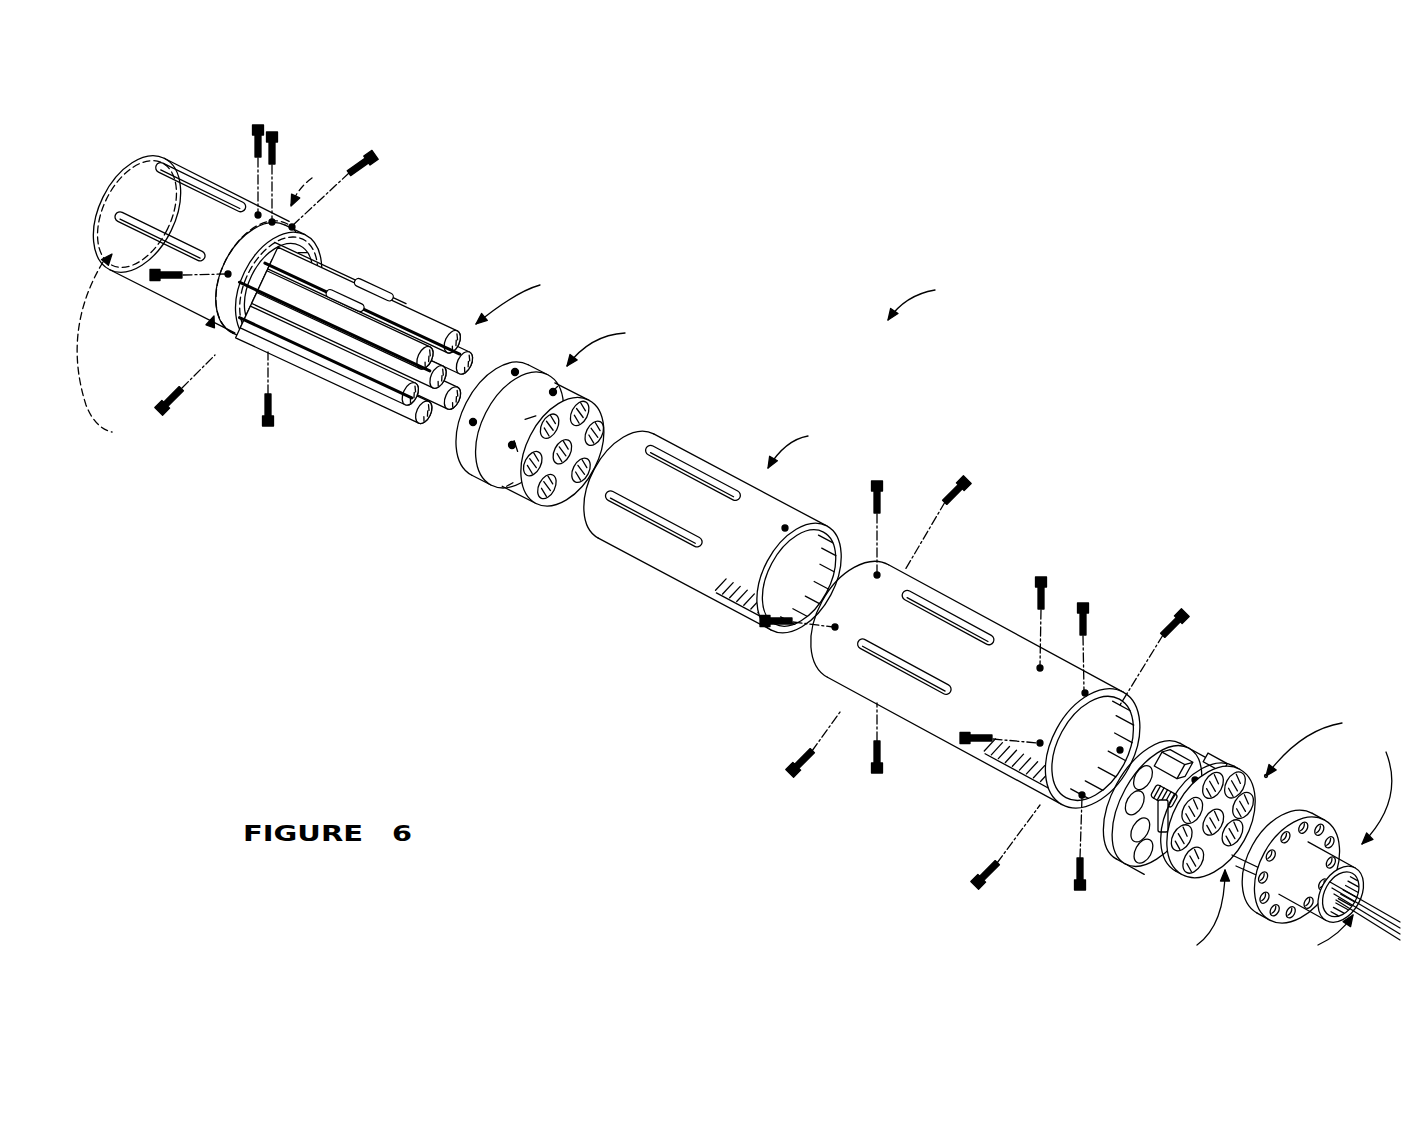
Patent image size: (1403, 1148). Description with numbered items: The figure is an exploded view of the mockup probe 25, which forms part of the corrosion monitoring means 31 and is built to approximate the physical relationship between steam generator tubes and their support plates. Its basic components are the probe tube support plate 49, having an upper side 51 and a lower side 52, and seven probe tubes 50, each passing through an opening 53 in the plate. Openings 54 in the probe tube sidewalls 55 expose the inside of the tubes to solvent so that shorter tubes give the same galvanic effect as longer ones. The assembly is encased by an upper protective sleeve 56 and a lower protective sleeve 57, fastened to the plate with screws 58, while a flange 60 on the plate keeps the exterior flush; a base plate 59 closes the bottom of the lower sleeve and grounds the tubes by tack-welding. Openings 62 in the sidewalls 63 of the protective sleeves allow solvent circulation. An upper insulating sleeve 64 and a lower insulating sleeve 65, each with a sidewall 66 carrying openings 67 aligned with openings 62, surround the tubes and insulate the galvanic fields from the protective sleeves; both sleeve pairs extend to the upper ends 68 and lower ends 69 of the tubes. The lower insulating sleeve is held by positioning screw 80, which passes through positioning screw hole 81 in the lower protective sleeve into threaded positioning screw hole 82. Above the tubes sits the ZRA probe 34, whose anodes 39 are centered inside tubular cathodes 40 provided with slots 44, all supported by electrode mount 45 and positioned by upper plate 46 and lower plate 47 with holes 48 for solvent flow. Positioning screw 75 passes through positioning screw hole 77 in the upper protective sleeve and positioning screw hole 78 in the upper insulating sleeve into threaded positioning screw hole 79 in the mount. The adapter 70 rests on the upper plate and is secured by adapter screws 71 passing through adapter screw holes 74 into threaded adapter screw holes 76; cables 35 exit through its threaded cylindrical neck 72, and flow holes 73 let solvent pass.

The mockup probe 25 is at (737, 519).
The means for monitoring corrosion 31 is at (1330, 744).
The zero resistance ammetry (ZRA) probe 34 is at (1266, 776).
The cables 35 is at (1283, 916).
The anode 39 is at (1185, 750).
The cathode 40 is at (1177, 845).
The slots 44 is at (1216, 762).
The electrode mount 45 is at (1113, 868).
The upper plate 46 is at (1176, 812).
The lower plate 47 is at (1146, 745).
The holes 48 is at (1168, 815).
The probe tube support plate 49 is at (569, 443).
The probe tube 50 is at (427, 313).
The upper side 51 is at (584, 408).
The lower side 52 is at (503, 357).
The opening 53 is at (593, 436).
The openings 54 is at (185, 235).
The probe tube sidewalls 55 is at (337, 253).
The upper protective sleeve 56 is at (1005, 790).
The lower protective sleeve 57 is at (232, 322).
The screws 58 is at (280, 150).
The base plate 59 is at (112, 178).
The flange 60 is at (492, 484).
The openings 62 is at (247, 214).
The sidewalls 63 is at (180, 294).
The upper insulating sleeve 64 is at (713, 532).
The lower insulating sleeve 65 is at (314, 185).
The sidewall 66 is at (214, 318).
The openings 67 is at (706, 466).
The upper ends 68 is at (522, 297).
The lower ends 69 is at (103, 347).
The adapter 70 is at (1312, 842).
The adapter screws 71 is at (1086, 603).
The threaded cylindrical neck 72 is at (1348, 854).
The flow holes 73 is at (1280, 912).
The adapter screw holes 74 is at (1087, 690).
The positioning screw 75 is at (1043, 577).
The threaded adapter screw holes 76 is at (1300, 815).
The positioning screw hole 77 is at (1042, 668).
The positioning screw hole 78 is at (787, 526).
The threaded positioning screw hole 79 is at (1197, 778).
The positioning screw 80 is at (264, 128).
The positioning screw hole 81 is at (272, 130).
The threaded positioning screw hole 82 is at (272, 222).